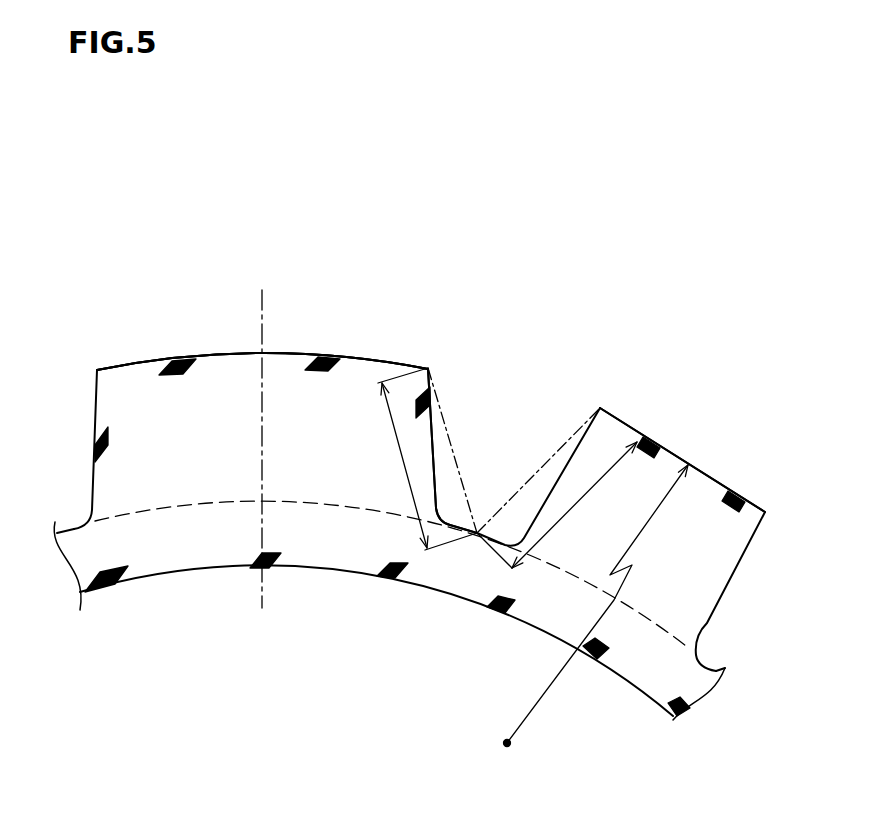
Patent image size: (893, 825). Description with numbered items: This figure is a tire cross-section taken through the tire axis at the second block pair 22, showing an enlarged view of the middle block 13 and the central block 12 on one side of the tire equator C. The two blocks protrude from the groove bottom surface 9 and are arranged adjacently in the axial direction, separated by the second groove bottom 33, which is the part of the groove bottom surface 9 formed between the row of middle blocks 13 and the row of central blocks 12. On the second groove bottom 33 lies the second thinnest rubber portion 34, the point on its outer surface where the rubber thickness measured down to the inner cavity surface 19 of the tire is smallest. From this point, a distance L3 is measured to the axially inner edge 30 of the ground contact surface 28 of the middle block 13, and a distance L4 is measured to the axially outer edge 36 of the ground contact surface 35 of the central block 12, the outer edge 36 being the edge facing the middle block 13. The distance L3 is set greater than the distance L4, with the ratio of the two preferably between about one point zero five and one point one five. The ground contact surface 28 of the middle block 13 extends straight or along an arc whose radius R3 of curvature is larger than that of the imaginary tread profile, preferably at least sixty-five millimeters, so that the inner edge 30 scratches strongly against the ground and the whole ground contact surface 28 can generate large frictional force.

The groove bottom surface 9 is at (133, 510).
The central block 12 is at (158, 357).
The middle block 13 is at (728, 490).
The inner cavity surface 19 is at (327, 572).
The second block pair 22 is at (118, 338).
The ground contact surface of the middle block 28 is at (710, 475).
The axially inner edge of the ground contact surface 30 is at (600, 407).
The second groove bottom 33 is at (465, 443).
The second thinnest rubber portion 34 is at (477, 533).
The ground contact surface of the central block 35 is at (215, 353).
The axially outer edge of the ground contact surface 36 is at (428, 368).
The distance L3 is at (577, 503).
The distance L4 is at (402, 463).
The radius R3 of curvature R3 is at (596, 607).
The tire equator C is at (262, 433).